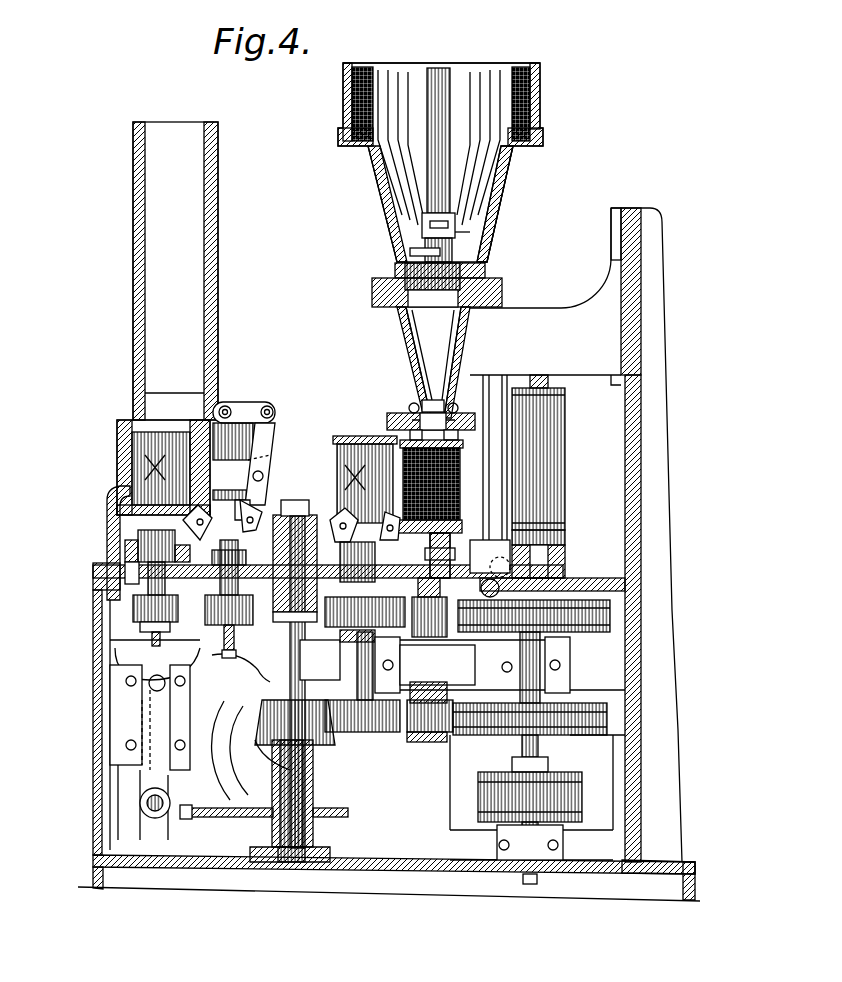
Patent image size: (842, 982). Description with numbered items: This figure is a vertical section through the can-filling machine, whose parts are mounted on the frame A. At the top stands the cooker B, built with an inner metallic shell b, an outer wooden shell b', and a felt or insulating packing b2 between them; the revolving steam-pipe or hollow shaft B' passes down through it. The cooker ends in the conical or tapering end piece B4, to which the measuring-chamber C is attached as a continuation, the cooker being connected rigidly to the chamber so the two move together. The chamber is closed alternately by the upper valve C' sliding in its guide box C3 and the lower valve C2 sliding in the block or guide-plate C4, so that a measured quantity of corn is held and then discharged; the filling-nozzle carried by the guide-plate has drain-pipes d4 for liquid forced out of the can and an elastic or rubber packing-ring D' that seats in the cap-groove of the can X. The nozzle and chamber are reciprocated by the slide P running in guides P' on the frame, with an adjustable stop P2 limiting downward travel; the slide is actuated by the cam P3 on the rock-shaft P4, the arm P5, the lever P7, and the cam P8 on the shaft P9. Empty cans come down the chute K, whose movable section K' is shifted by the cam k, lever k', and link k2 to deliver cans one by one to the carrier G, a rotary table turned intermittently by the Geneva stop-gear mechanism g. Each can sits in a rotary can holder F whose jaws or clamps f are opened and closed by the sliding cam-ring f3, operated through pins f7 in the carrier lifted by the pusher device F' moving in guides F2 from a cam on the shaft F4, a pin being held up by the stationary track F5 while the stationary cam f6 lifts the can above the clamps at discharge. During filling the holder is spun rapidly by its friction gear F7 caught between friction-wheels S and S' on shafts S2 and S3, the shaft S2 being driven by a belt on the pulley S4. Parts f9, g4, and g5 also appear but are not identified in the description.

The cooker B is at (440, 162).
The inner metallic shell b is at (441, 82).
The outer wooden shell b' is at (536, 84).
The felt or insulating packing b2 is at (510, 62).
The revolving steam-pipe or hollow shaft B' is at (442, 165).
The conical or tapering end piece B4 is at (490, 197).
The guide box or way C3 is at (372, 292).
The upper valve C' is at (418, 307).
The measuring-chamber C is at (433, 362).
The lower valve C2 is at (412, 421).
The drain-pipes d4 is at (418, 407).
The block or guide-plate C4 is at (388, 430).
The elastic or rubber packing-ring D' is at (450, 436).
The slide P is at (582, 554).
The guides P' is at (606, 376).
The adjustable stop P2 is at (553, 461).
The rock-shaft P4 is at (563, 505).
The frame A is at (240, 863).
The movable section of feed chute K' is at (175, 271).
The passage or chute K is at (143, 467).
The can X is at (264, 477).
The link k2 is at (241, 410).
The lever k' is at (274, 464).
The cam k is at (261, 488).
The carrier G is at (297, 505).
The rotary can holder F is at (101, 670).
The sliding cam-ring or conical sleeve f3 is at (136, 560).
The shaft f9 is at (127, 562).
The friction gear or wheel F7 is at (133, 610).
The pusher device F' is at (123, 654).
The stationary cam f6 is at (250, 655).
The guides F2 is at (130, 701).
The shaft F4 is at (140, 803).
The Geneva stop-gear mechanism g is at (264, 822).
The bevel gear g4 is at (268, 716).
The cam P8 is at (231, 750).
The arm g5 is at (264, 753).
The shaft P9 is at (300, 760).
The lever P7 is at (320, 660).
The friction-wheel S' is at (365, 619).
The friction-wheel S is at (534, 616).
The shaft S3 is at (378, 666).
The shaft S2 is at (562, 750).
The stationary track or cam F5 is at (472, 665).
The arm P5 is at (472, 660).
The cam P3 is at (439, 695).
The pulley S4 is at (531, 820).
The jaws or clamps f is at (343, 509).
The pins f7 is at (450, 545).